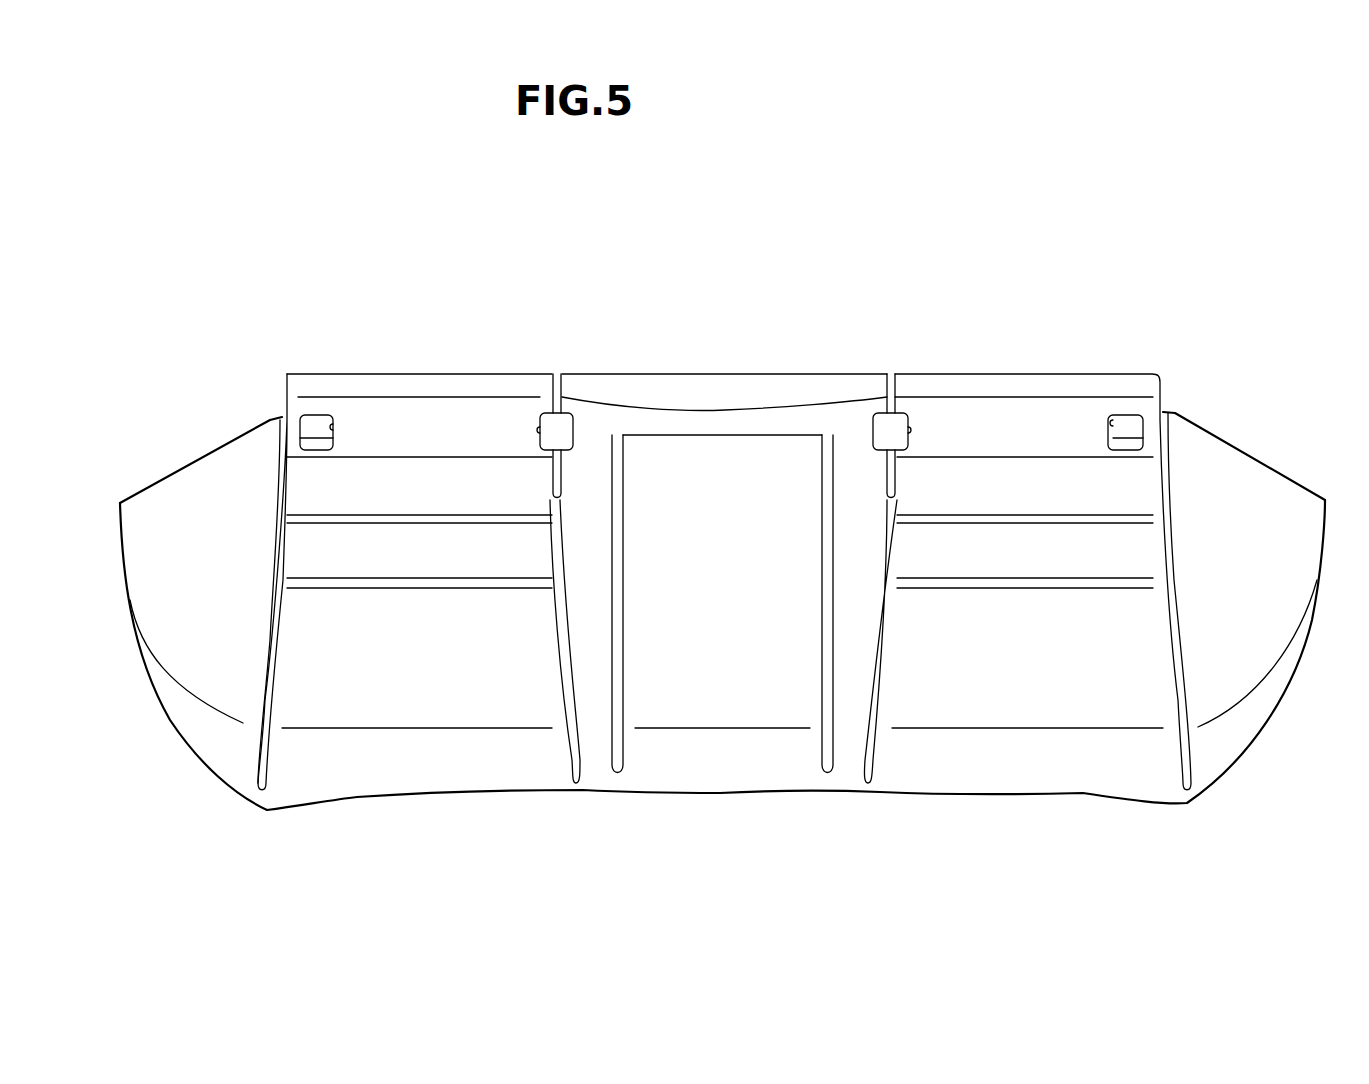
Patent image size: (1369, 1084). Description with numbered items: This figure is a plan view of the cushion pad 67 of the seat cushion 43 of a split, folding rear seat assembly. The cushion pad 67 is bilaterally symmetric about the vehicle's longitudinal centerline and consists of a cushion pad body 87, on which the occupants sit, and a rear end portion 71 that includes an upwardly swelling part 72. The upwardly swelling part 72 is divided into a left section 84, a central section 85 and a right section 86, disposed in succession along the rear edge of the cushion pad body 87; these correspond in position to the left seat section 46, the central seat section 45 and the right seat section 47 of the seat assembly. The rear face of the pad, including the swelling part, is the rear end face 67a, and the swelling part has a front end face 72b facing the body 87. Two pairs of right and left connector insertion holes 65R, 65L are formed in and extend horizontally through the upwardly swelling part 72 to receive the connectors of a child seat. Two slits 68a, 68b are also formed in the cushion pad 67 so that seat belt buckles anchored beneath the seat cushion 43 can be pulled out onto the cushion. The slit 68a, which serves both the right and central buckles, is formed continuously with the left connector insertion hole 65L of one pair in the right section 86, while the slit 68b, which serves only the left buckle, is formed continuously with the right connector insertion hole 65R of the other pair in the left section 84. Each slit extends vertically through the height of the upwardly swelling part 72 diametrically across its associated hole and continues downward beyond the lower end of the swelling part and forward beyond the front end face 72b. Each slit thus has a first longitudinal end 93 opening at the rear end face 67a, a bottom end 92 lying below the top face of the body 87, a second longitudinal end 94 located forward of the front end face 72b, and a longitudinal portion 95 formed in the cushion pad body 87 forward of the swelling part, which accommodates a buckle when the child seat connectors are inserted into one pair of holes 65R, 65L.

The seat cushion 43 is at (138, 470).
The cushion pad 67 is at (190, 468).
The right section 86 is at (587, 362).
The central section 85 is at (857, 362).
The left section 84 is at (1160, 363).
The rear end face 67a is at (670, 372).
The right connector insertion hole 65R is at (335, 430).
The left connector insertion hole 65L is at (540, 427).
The front end face 72b is at (432, 418).
The slit 68a is at (552, 477).
The slit 68b is at (898, 478).
The first longitudinal end 93 is at (557, 372).
The bottom end 92 is at (925, 372).
The rear end portion 71 is at (1018, 457).
The upwardly swelling part 72 is at (1063, 372).
The longitudinal portion 95 is at (1113, 420).
The second longitudinal end 94 is at (557, 500).
The cushion pad body 87 is at (362, 665).
The right seat section 47 is at (440, 778).
The central seat section 45 is at (720, 768).
The left seat section 46 is at (1080, 773).